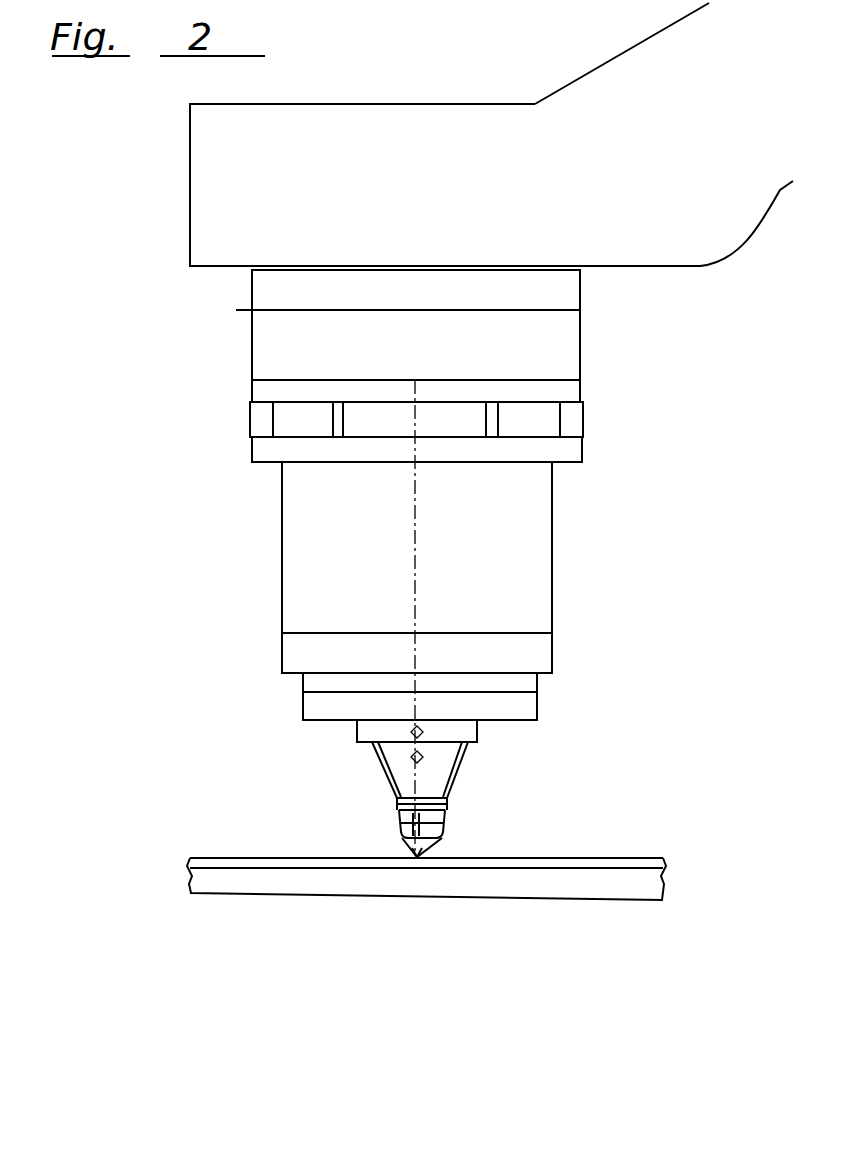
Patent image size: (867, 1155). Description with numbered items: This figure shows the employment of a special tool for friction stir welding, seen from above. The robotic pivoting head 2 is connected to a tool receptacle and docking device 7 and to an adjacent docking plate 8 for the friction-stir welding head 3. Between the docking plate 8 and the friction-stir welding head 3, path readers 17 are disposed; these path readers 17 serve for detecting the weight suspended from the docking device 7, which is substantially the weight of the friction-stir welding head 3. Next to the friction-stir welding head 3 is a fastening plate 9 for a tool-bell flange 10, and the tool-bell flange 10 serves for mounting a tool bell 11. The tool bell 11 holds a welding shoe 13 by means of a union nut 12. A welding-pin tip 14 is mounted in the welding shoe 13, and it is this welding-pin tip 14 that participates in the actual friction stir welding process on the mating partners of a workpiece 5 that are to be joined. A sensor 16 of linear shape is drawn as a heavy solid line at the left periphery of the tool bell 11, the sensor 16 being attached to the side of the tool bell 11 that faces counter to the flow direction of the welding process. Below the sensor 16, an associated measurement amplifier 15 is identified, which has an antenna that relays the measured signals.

The robotic pivoting head 2 is at (232, 198).
The friction-stir welding head 3 is at (520, 500).
The workpiece 5 is at (345, 877).
The tool receptacle and docking device 7 is at (562, 332).
The docking plate 8 is at (569, 391).
The fastening plate 9 is at (515, 697).
The tool-bell flange 10 is at (470, 727).
The tool bell 11 is at (445, 764).
The union nut 12 is at (440, 821).
The welding shoe 13 is at (430, 846).
The welding-pin tip 14 is at (418, 857).
The measurement amplifier 15 is at (398, 805).
The sensor 16 is at (378, 765).
The path readers 17 is at (523, 425).